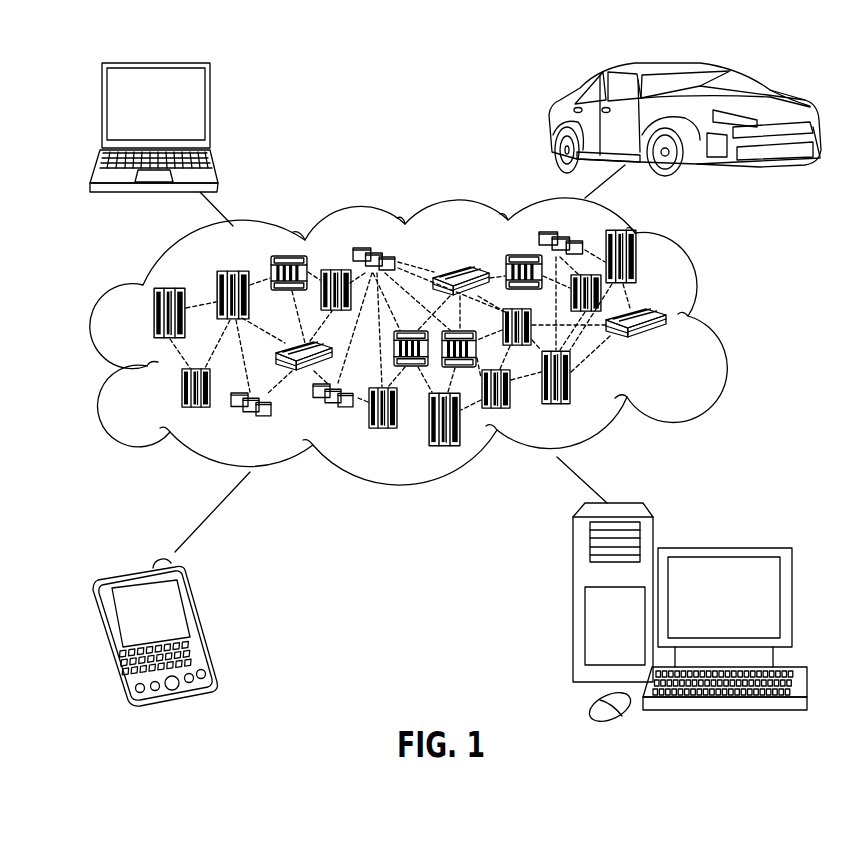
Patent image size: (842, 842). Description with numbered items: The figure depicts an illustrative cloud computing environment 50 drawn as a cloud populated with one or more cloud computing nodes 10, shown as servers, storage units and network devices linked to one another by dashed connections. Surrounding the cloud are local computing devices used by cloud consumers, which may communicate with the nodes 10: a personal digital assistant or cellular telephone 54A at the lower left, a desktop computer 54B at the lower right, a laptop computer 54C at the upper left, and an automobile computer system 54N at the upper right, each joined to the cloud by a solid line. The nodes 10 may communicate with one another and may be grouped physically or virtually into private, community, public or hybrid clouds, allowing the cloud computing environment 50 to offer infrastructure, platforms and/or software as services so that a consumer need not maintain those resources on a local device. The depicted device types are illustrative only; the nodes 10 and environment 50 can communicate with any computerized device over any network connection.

The cloud computing nodes 10 is at (698, 360).
The cloud computing environment 50 is at (727, 323).
The personal digital assistant (PDA) or cellular telephone 54A is at (200, 620).
The desktop computer 54B is at (722, 548).
The laptop computer 54C is at (208, 110).
The automobile computer system 54N is at (552, 124).